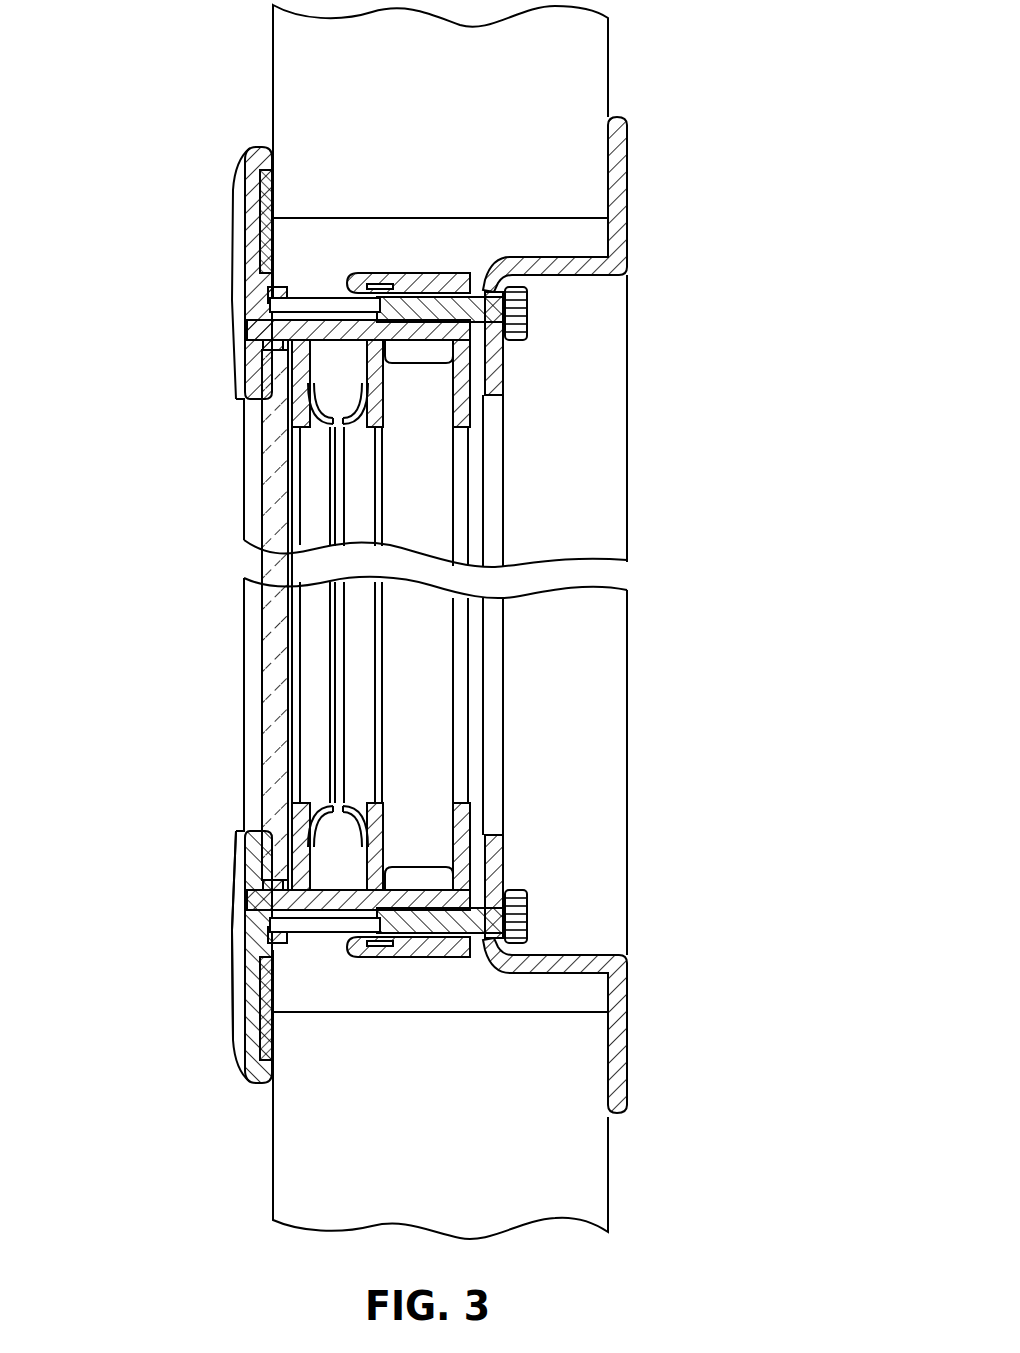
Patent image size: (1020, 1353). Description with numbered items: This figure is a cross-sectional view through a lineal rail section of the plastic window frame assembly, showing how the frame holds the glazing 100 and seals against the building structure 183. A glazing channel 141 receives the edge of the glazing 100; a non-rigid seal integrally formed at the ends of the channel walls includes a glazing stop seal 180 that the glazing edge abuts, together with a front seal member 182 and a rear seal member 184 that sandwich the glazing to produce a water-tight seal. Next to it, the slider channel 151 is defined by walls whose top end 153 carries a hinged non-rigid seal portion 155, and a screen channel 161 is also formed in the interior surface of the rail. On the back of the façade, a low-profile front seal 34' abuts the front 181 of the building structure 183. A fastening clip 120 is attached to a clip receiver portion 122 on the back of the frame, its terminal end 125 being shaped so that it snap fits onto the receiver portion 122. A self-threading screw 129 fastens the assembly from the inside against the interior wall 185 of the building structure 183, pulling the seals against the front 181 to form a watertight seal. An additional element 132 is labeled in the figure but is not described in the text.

The building structure 183 is at (586, 1196).
The interior wall of the building structure 185 is at (609, 1158).
The front seal 34' is at (271, 615).
The insert strip 132 is at (262, 217).
The glazing channel 141 is at (246, 366).
The glazing stop seal 180 is at (257, 337).
The terminal end of the clip 125 is at (357, 277).
The clip receiver portion 122 is at (397, 288).
The fastening clip 120 is at (443, 283).
The self-threading screw 129 is at (527, 308).
The screen channel 161 is at (430, 848).
The top end of slider channel wall 153 is at (376, 612).
The slider channel 151 is at (328, 358).
The non-rigid seal portion 155 is at (347, 810).
The glazing 100 is at (268, 690).
The rear seal member 184 is at (268, 400).
The front seal member 182 is at (250, 831).
The front of the building structure 181 is at (273, 1140).